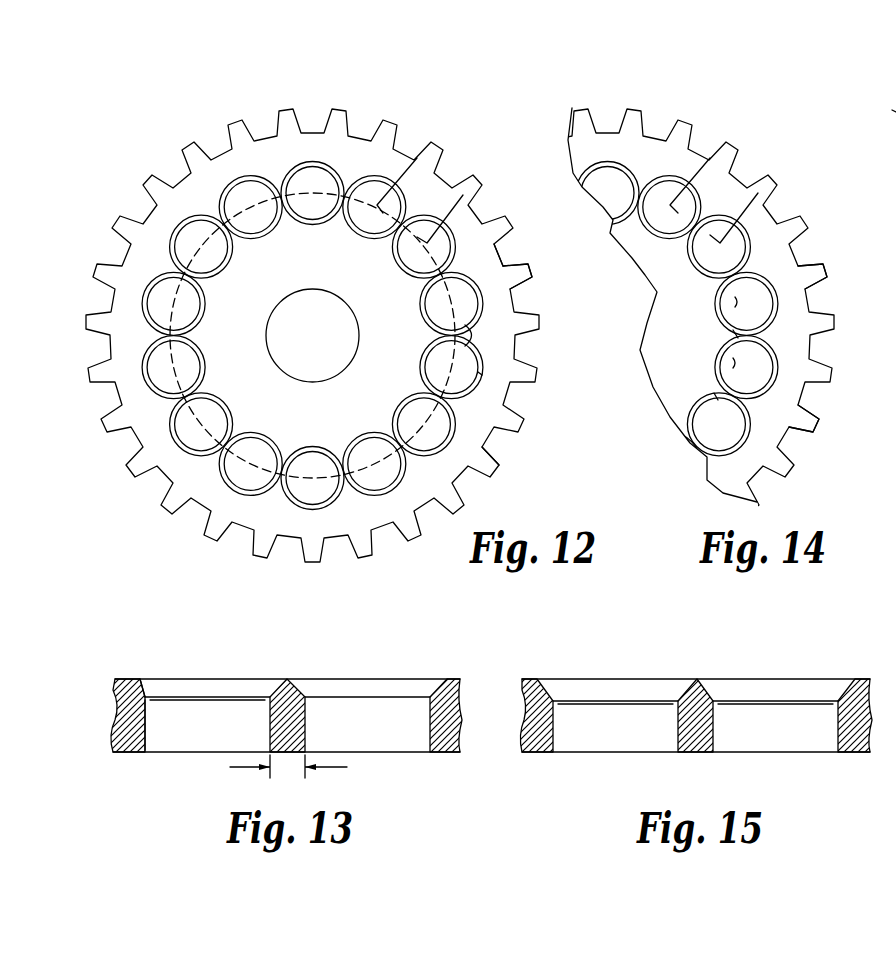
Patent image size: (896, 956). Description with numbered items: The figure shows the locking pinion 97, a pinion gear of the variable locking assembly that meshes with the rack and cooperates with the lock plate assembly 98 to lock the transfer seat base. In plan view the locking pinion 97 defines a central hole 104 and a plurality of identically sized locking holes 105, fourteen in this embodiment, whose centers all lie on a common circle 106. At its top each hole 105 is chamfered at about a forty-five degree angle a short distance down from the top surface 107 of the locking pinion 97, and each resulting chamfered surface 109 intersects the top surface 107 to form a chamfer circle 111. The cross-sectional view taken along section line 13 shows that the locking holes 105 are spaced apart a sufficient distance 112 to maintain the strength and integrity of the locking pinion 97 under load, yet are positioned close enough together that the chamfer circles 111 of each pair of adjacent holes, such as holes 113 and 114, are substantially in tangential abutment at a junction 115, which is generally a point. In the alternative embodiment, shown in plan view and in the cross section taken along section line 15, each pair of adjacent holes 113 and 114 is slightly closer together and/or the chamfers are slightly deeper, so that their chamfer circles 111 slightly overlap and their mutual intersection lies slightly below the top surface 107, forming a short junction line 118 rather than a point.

In FIG. 12, the section line 13 is at (430, 135).
In FIG. 14, the section line 15 is at (722, 135).
In FIG. 12, the locking pinion 97 is at (407, 103).
In FIG. 14, the locking pinion 97 is at (695, 103).
In FIG. 14, the lock plate assembly 98 is at (895, 104).
In FIG. 12, the central hole 104 is at (355, 329).
In FIG. 12, the locking holes 105 is at (238, 206).
In FIG. 13, the locking holes 105 is at (162, 730).
In FIG. 12, the common circle 106 is at (470, 438).
In FIG. 12, the top surface 107 is at (255, 165).
In FIG. 13, the top surface 107 is at (395, 679).
In FIG. 15, the top surface 107 is at (805, 679).
In FIG. 12, the chamfered surface 109 is at (478, 287).
In FIG. 13, the chamfered surface 109 is at (145, 697).
In FIG. 12, the chamfer circle 111 is at (490, 252).
In FIG. 14, the chamfer circle 111 is at (810, 283).
In FIG. 13, the chamfer circle 111 is at (130, 679).
In FIG. 13, the spacing distance 112 is at (347, 770).
In FIG. 12, the adjacent hole 113 is at (472, 307).
In FIG. 14, the adjacent hole 113 is at (735, 297).
In FIG. 13, the adjacent hole 113 is at (190, 730).
In FIG. 15, the adjacent hole 113 is at (598, 733).
In FIG. 12, the adjacent hole 114 is at (478, 372).
In FIG. 14, the adjacent hole 114 is at (733, 358).
In FIG. 13, the adjacent hole 114 is at (392, 735).
In FIG. 15, the adjacent hole 114 is at (800, 737).
In FIG. 12, the junction 115 is at (472, 340).
In FIG. 13, the junction 115 is at (287, 679).
In FIG. 14, the junction line 118 is at (733, 330).
In FIG. 15, the junction line 118 is at (700, 679).